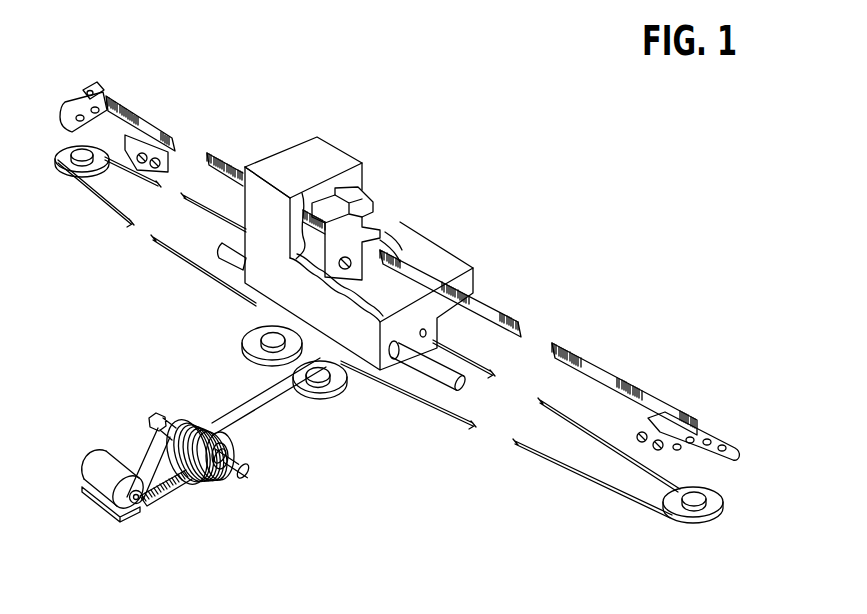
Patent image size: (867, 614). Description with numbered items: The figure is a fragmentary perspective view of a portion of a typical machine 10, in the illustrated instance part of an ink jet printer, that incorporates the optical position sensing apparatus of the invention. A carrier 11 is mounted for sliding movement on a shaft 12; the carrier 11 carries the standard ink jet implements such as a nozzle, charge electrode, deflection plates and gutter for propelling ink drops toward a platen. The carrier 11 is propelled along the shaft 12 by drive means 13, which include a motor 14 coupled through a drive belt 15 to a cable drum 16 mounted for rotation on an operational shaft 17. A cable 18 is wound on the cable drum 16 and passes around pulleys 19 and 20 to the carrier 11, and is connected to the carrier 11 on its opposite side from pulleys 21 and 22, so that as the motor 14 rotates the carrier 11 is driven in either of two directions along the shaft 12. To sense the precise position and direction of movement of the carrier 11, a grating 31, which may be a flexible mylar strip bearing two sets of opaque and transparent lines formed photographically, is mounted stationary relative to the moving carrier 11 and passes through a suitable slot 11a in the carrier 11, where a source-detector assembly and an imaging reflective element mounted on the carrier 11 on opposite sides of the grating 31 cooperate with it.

The machine 10 is at (256, 126).
The carrier 11 is at (333, 158).
The slot 11a is at (398, 232).
The shaft 12 is at (440, 392).
The drive means 13 is at (113, 430).
The motor 14 is at (97, 467).
The drive belt 15 is at (178, 490).
The cable drum 16 is at (236, 448).
The operational shaft 17 is at (227, 481).
The cable 18 is at (252, 395).
The pulley 19 is at (252, 338).
The pulley 20 is at (67, 165).
The pulley 21 is at (317, 396).
The pulley 22 is at (682, 513).
The grating 31 is at (607, 375).